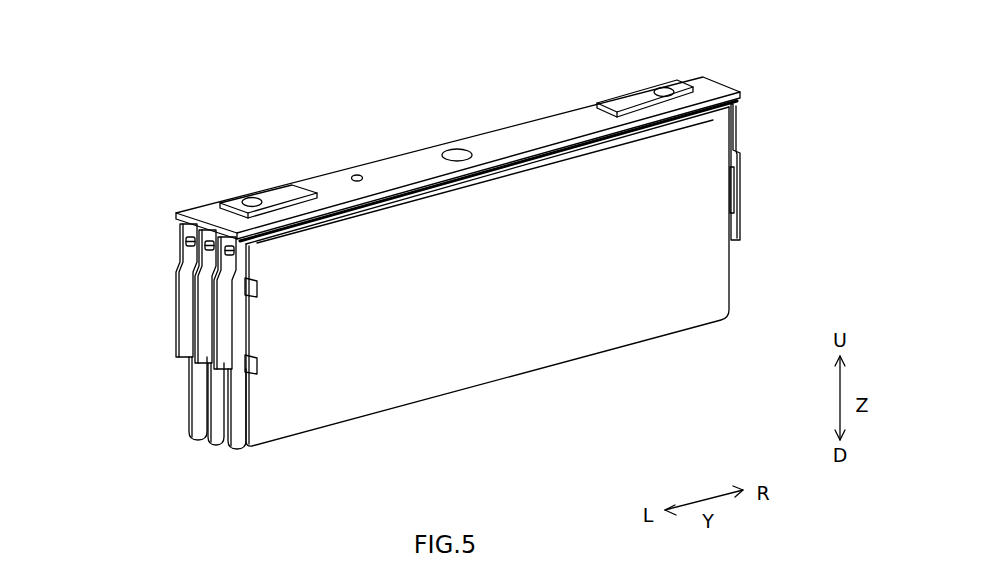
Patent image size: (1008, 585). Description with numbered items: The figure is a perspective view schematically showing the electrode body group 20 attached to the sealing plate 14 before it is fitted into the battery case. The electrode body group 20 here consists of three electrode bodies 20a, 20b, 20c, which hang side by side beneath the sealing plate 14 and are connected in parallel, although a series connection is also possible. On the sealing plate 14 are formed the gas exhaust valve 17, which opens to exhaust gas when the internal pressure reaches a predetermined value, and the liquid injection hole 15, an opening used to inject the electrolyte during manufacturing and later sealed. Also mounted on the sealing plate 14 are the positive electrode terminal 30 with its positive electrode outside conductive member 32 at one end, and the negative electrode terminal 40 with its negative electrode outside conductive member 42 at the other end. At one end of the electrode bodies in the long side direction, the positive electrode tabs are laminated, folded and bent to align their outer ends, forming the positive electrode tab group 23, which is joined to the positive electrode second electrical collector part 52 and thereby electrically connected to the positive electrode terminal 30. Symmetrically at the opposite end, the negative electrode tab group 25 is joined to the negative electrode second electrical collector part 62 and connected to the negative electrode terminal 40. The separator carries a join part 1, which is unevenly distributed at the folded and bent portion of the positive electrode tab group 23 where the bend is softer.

The join part 1 is at (259, 290).
The sealing plate 14 is at (537, 130).
The liquid injection hole 15 is at (360, 174).
The gas exhaust valve 17 is at (460, 148).
The electrode body group 20 is at (149, 419).
The electrode body 20a is at (230, 437).
The electrode body 20b is at (216, 424).
The electrode body 20c is at (200, 407).
The positive electrode tab group 23 is at (249, 375).
The negative electrode tab group 25 is at (745, 223).
The positive electrode terminal 30 is at (252, 196).
The positive electrode outside conductive member 32 is at (283, 187).
The negative electrode terminal 40 is at (666, 88).
The negative electrode outside conductive member 42 is at (636, 100).
The positive electrode second electrical collector part 52 is at (174, 310).
The negative electrode second electrical collector part 62 is at (748, 171).